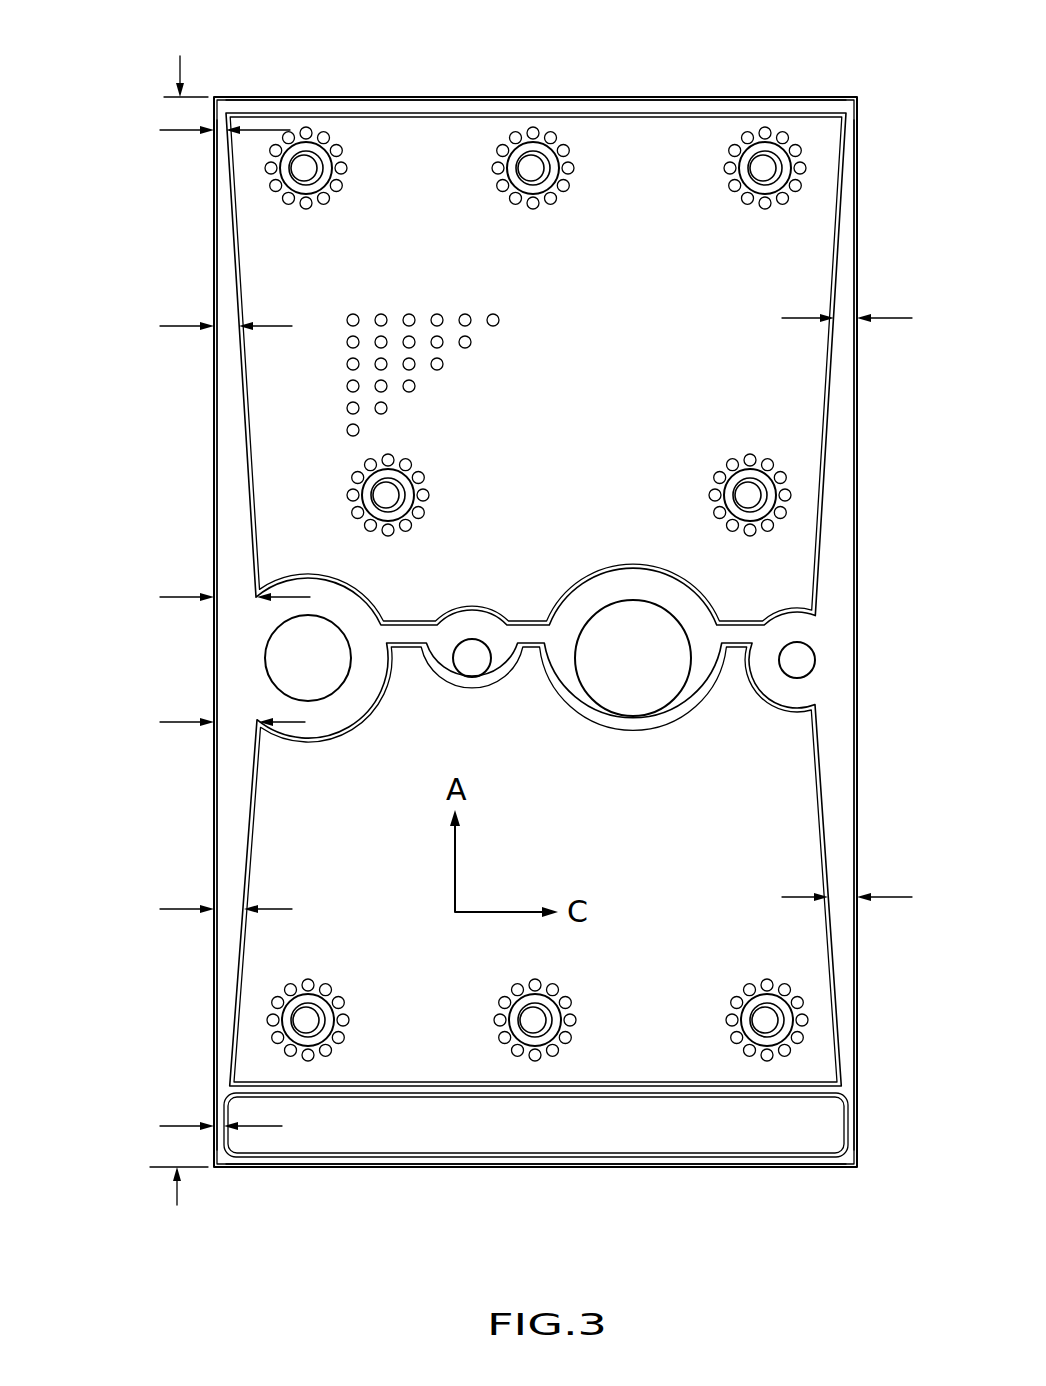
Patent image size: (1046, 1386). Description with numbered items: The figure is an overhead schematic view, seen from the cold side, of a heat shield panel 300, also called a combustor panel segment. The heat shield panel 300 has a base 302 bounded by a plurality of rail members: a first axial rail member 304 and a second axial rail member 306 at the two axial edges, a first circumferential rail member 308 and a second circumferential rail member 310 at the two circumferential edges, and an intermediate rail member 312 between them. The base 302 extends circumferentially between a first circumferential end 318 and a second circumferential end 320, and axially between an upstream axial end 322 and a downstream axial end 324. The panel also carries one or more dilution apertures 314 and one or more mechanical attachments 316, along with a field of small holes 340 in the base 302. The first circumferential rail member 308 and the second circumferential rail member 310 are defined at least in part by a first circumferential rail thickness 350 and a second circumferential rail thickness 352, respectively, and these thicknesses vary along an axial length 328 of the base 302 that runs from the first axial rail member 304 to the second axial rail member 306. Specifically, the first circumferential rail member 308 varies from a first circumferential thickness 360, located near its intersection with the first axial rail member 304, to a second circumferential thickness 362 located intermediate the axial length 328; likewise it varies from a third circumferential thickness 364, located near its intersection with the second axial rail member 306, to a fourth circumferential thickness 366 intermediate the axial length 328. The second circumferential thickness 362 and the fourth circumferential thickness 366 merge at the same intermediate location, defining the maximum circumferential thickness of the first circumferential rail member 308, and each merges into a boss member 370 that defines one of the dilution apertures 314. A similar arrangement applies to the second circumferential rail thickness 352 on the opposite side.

The heat shield panel 300 is at (126, 66).
The base 302 is at (664, 414).
The first axial rail member 304 is at (414, 100).
The second axial rail member 306 is at (386, 1160).
The first circumferential rail member 308 is at (228, 474).
The second circumferential rail member 310 is at (838, 378).
The intermediate rail member 312 is at (490, 1088).
The dilution aperture 314 is at (629, 728).
The mechanical attachment 316 is at (533, 170).
The first circumferential end 318 is at (212, 402).
The second circumferential end 320 is at (854, 416).
The upstream axial end 322 is at (547, 100).
The downstream axial end 324 is at (650, 1165).
The axial length 328 is at (195, 96).
The vent holes 340 is at (442, 366).
The first circumferential rail thickness 350 is at (178, 325).
The second circumferential rail thickness 352 is at (892, 316).
The first circumferential thickness 360 is at (180, 133).
The second circumferential thickness 362 is at (180, 600).
The third circumferential thickness 364 is at (178, 1125).
The fourth circumferential thickness 366 is at (180, 726).
The boss member 370 is at (343, 612).